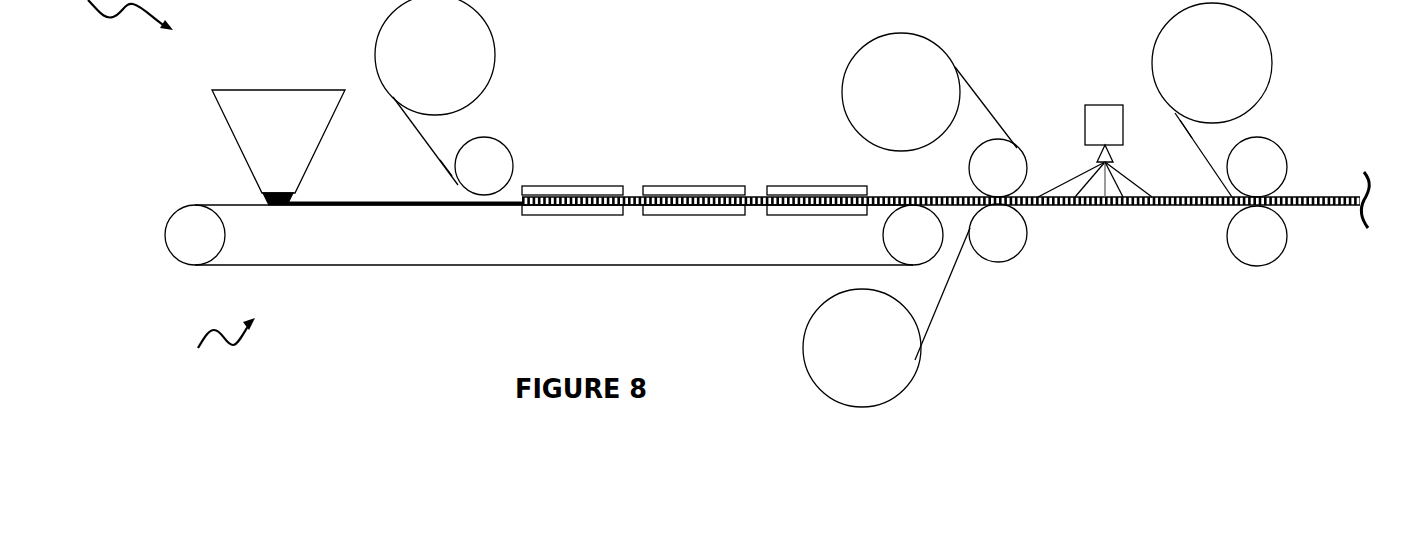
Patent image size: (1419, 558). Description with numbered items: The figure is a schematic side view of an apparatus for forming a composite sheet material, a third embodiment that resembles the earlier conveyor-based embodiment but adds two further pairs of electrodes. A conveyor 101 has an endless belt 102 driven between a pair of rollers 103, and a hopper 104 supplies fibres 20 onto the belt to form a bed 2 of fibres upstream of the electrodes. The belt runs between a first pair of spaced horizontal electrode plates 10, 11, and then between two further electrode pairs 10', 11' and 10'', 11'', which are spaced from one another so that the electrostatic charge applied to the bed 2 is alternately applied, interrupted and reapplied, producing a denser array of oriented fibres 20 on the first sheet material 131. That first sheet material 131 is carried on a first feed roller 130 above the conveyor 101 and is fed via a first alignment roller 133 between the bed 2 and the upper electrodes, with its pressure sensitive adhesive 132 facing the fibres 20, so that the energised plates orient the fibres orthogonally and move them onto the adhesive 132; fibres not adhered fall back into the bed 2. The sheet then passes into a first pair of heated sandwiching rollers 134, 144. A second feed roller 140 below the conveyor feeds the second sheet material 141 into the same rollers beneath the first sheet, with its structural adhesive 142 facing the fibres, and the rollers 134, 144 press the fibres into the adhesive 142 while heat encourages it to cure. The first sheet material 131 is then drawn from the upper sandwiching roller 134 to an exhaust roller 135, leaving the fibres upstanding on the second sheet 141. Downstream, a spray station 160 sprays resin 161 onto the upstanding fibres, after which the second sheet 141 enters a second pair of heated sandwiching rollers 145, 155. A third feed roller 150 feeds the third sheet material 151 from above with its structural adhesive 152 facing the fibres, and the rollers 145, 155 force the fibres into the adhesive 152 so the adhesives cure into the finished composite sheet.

The bed 2 is at (350, 203).
The first electrode plate 10 is at (555, 223).
The further lower electrode 10' is at (674, 223).
The further lower electrode 10'' is at (793, 223).
The second electrode plate 11 is at (572, 170).
The further upper electrode 11' is at (694, 170).
The further upper electrode 11'' is at (817, 170).
The fibres 20 is at (1208, 195).
The conveyor 101 is at (209, 351).
The endless belt 102 is at (428, 265).
The rollers 103 is at (187, 242).
The hopper 104 is at (260, 141).
The first feed roller 130 is at (413, 68).
The first sheet material 131 is at (427, 130).
The pressure sensitive adhesive 132 is at (443, 163).
The first alignment roller 133 is at (464, 174).
The sandwiching roller 134 is at (978, 179).
The exhaust roller 135 is at (879, 103).
The second feed roller 140 is at (840, 361).
The second sheet material 141 is at (940, 312).
The structural adhesive 142 is at (953, 272).
The sandwiching roller 144 is at (978, 244).
The sandwiching roller 145 is at (1270, 227).
The third feed roller 150 is at (1190, 76).
The third sheet material 151 is at (1202, 137).
The structural adhesive 152 is at (1187, 130).
The sandwiching roller 155 is at (1272, 160).
The spray station 160 is at (1103, 105).
The resin 161 is at (1070, 175).